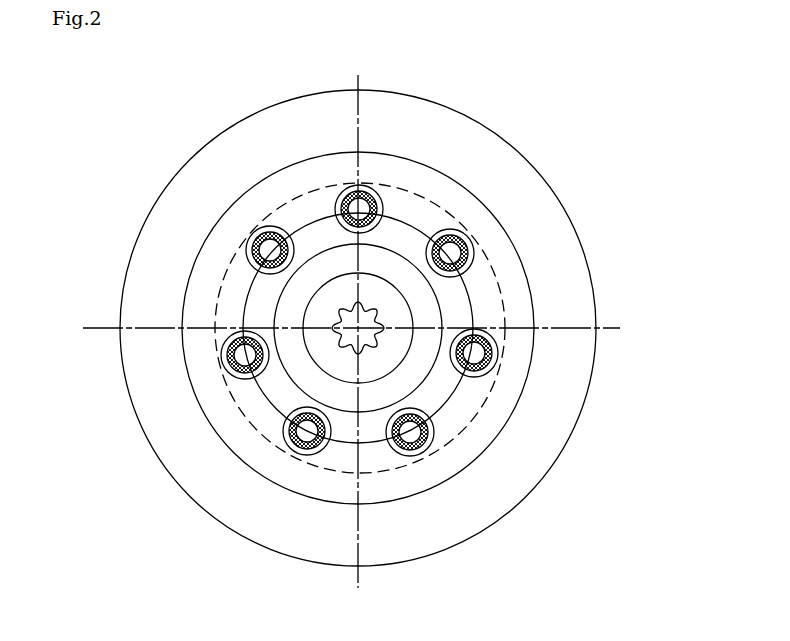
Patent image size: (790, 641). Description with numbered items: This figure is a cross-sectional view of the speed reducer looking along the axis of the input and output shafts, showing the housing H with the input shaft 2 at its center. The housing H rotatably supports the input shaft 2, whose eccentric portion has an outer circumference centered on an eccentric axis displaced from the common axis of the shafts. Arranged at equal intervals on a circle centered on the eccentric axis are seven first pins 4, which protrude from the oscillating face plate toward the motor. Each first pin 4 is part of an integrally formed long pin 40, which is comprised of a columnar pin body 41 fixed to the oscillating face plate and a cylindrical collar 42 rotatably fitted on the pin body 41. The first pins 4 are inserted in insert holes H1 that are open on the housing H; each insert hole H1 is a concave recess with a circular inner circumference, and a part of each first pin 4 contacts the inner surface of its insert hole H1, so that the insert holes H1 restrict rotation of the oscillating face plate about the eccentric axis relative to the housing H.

The input shaft 2 is at (347, 287).
The first pins 4 is at (453, 242).
The long pins 40 is at (477, 352).
The pin bodies 41 is at (412, 433).
The collars 42 is at (478, 363).
The housing H is at (523, 297).
The insert holes H1 is at (473, 262).